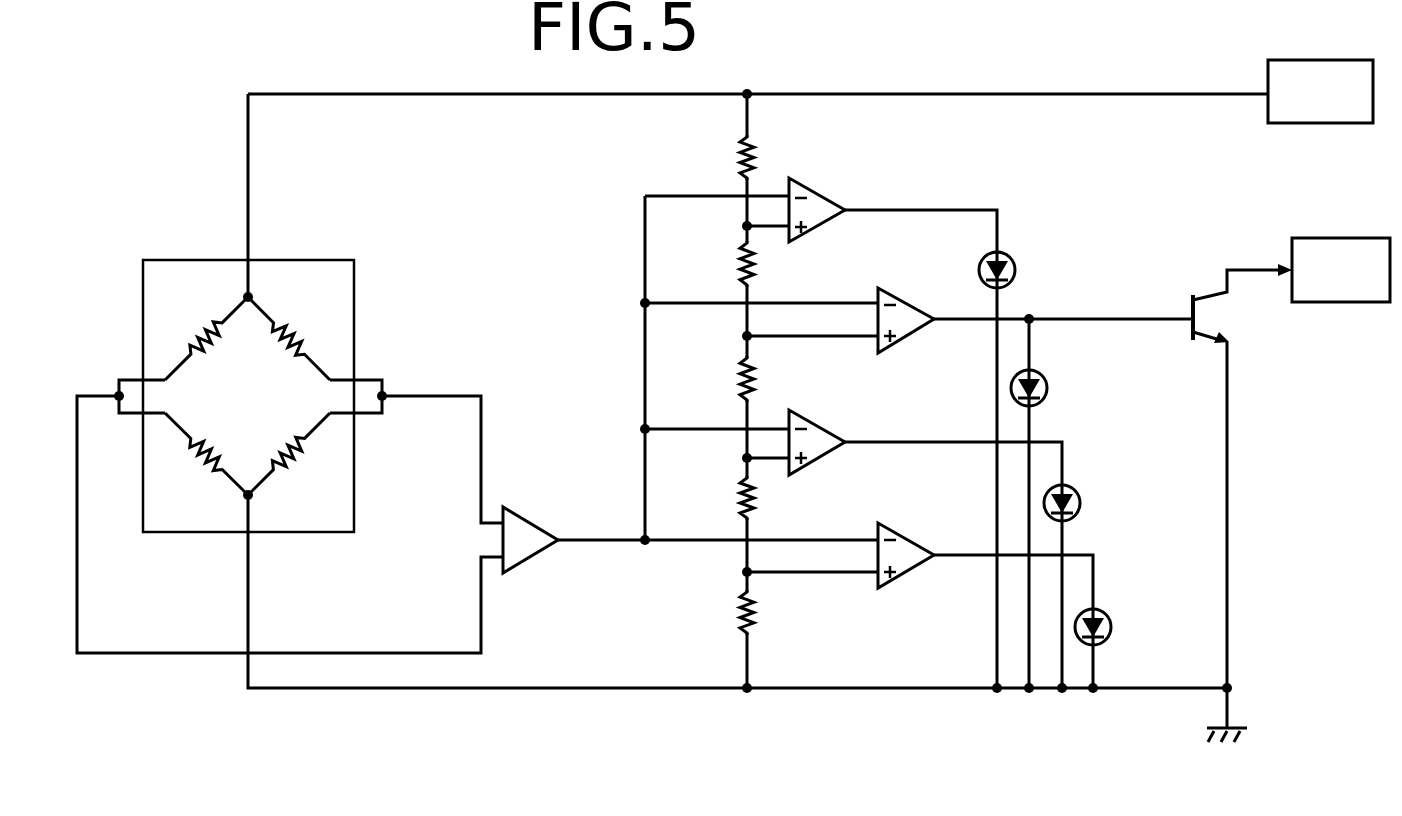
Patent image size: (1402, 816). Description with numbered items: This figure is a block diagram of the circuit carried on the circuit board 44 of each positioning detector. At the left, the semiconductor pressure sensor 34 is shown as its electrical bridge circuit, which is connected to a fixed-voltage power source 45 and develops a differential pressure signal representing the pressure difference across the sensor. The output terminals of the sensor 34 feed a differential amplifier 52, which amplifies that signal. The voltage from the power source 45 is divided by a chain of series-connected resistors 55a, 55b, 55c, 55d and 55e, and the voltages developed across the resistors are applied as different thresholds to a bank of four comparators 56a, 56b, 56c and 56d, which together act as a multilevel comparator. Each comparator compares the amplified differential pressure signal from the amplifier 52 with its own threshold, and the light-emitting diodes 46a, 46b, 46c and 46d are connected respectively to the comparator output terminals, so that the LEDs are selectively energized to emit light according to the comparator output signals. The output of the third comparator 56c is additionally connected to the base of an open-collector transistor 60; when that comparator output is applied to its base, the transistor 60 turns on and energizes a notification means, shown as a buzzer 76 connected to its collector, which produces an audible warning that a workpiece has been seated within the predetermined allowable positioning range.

The semiconductor pressure sensor 34 is at (372, 305).
The circuit board 44 is at (1017, 54).
The fixed-voltage power source 45 is at (1308, 123).
The light-emitting diode 46a is at (1112, 630).
The light-emitting diode 46b is at (1082, 505).
The light-emitting diode 46c is at (1048, 388).
The light-emitting diode 46d is at (1017, 265).
The differential amplifier 52 is at (528, 517).
The resistor 55a is at (745, 610).
The resistor 55b is at (745, 502).
The resistor 55c is at (745, 378).
The resistor 55d is at (745, 268).
The resistor 55e is at (745, 160).
The comparator 56a is at (905, 575).
The comparator 56b is at (822, 460).
The comparator 56c is at (912, 340).
The comparator 56d is at (820, 205).
The open-collector transistor 60 is at (1212, 318).
The buzzer 76 is at (1355, 302).